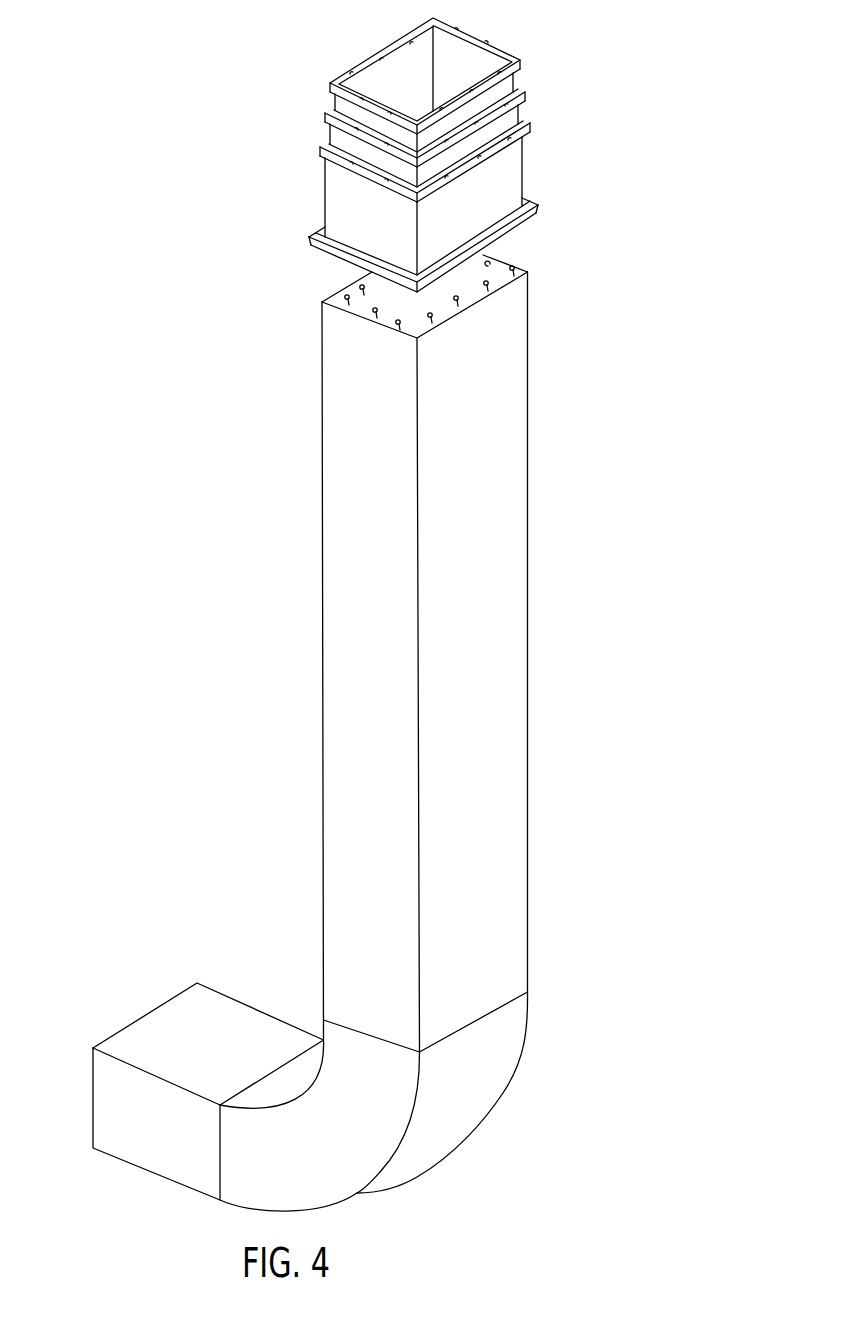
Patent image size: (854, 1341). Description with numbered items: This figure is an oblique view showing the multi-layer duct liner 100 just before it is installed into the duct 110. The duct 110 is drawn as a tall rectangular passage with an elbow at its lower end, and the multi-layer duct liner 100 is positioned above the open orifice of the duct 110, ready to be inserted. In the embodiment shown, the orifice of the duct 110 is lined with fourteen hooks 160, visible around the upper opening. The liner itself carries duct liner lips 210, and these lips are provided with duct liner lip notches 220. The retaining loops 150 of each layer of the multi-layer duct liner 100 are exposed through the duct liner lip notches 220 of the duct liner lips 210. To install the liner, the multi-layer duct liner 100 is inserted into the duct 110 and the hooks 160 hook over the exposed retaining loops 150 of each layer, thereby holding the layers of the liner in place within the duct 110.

The multi-layer duct liner 100 is at (461, 146).
The duct 110 is at (528, 400).
The retaining loops 150 is at (328, 85).
The hooks 160 is at (513, 267).
The duct liner lips 210 is at (463, 25).
The duct liner lip notches 220 is at (505, 50).